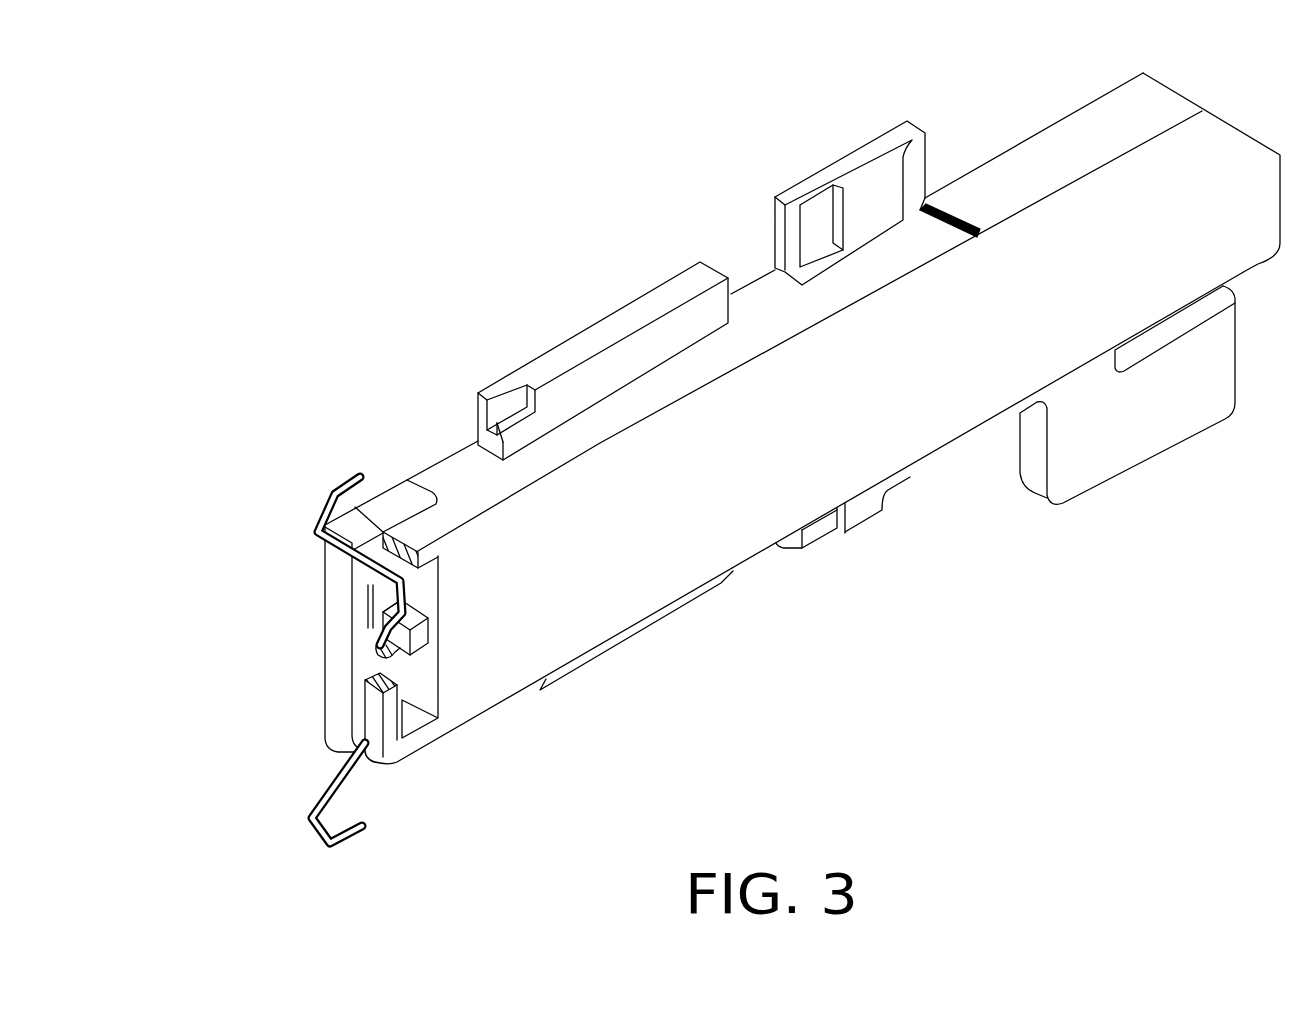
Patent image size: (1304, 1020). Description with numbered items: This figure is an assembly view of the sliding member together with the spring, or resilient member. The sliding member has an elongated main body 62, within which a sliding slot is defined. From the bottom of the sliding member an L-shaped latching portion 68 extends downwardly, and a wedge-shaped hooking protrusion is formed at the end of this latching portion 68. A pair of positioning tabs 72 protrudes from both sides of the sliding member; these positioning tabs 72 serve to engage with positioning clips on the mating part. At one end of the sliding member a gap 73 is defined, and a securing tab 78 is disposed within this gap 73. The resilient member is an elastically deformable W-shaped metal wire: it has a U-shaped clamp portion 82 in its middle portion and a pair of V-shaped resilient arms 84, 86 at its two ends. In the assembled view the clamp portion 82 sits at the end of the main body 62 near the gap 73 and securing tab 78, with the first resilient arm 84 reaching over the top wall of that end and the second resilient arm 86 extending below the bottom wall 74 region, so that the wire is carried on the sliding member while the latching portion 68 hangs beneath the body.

The main body 62 is at (1007, 270).
The L-shaped latching portion 68 is at (1122, 430).
The positioning tab 72 is at (513, 413).
The gap 73 is at (400, 513).
The bottom wall 74 is at (372, 705).
The securing tab 78 is at (375, 655).
The U-shaped clamp portion 82 is at (380, 642).
The V-shaped resilient arm 84 is at (310, 535).
The V-shaped resilient arm 86 is at (308, 818).